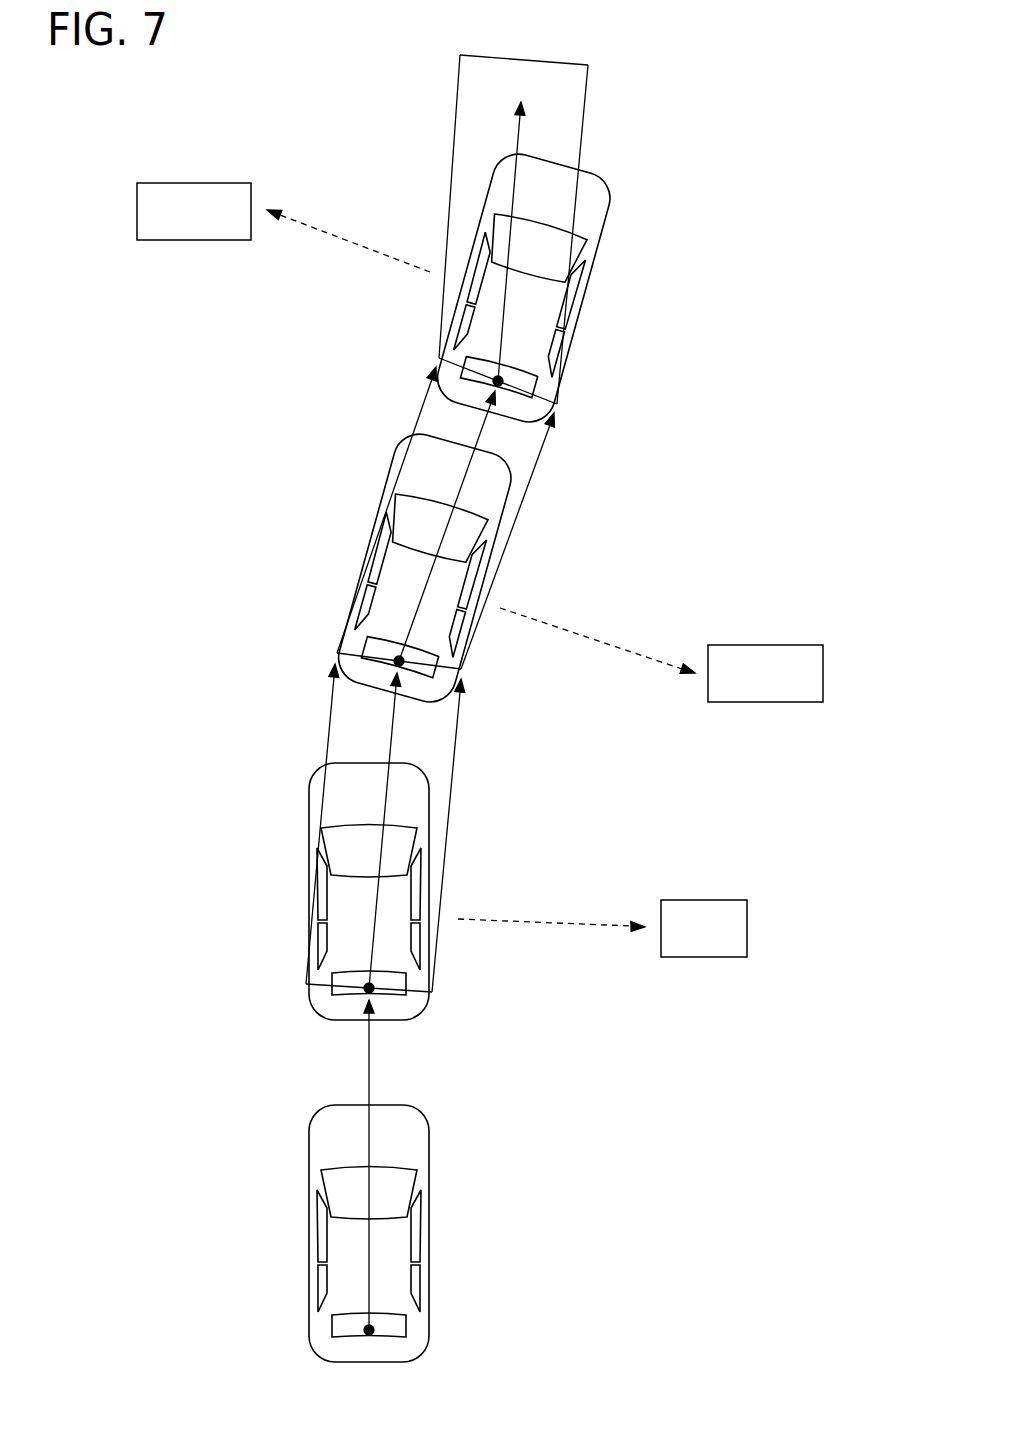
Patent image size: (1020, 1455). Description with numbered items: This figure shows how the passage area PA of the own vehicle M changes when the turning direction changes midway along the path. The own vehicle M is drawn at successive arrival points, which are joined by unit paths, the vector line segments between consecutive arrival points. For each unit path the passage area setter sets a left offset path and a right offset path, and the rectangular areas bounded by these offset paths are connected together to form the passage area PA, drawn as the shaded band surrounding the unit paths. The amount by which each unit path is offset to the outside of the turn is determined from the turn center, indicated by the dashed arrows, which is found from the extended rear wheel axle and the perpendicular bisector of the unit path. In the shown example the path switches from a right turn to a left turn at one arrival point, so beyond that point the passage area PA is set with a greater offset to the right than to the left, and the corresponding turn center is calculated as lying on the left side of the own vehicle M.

The passage area PA is at (447, 722).
The own vehicle M is at (431, 1233).